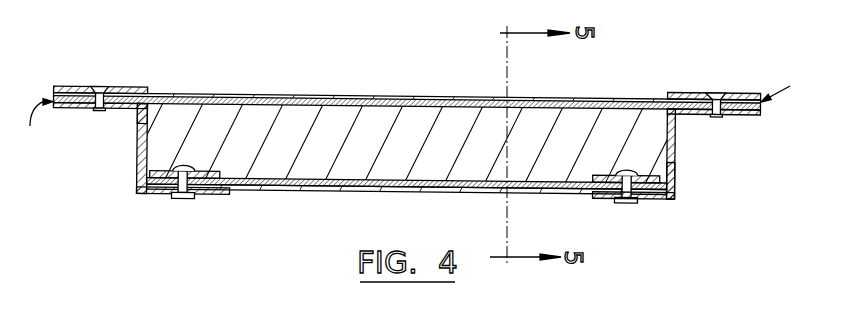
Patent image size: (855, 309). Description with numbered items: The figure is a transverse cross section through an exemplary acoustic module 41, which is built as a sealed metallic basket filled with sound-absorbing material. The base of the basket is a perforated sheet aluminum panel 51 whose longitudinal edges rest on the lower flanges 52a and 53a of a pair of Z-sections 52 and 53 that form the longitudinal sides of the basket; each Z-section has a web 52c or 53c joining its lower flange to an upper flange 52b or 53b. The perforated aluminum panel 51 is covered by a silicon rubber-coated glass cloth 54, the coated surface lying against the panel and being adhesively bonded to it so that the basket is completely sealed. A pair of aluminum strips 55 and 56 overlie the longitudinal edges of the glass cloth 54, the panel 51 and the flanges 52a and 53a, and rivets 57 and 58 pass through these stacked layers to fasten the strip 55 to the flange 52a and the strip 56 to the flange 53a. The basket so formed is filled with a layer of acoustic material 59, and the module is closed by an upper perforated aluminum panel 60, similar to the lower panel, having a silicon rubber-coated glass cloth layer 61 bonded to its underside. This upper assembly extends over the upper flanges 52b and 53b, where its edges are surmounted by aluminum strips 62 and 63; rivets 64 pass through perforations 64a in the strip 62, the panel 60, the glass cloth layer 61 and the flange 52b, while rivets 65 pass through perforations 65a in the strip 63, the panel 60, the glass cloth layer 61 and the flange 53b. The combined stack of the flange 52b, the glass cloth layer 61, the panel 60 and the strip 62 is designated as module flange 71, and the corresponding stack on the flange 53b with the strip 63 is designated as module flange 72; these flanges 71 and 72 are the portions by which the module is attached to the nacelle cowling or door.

The module 41 is at (425, 97).
The perforated sheet aluminum panel 51 is at (252, 190).
The Z-section 52 is at (674, 140).
The lower flange of Z-section 52 52a is at (651, 199).
The upper flange of Z-section 52 52b is at (738, 114).
The web portion of Z-section 52 52c is at (674, 181).
The Z-section 53 is at (138, 172).
The lower flange of Z-section 53 53a is at (160, 188).
The upper flange of Z-section 53 53b is at (72, 109).
The web of Z-section 53 53c is at (137, 120).
The silicon rubber-coated glass cloth 54 is at (262, 176).
The aluminum strip 55 is at (603, 175).
The aluminum strip 56 is at (165, 171).
The rivet 57 is at (629, 170).
The rivet 58 is at (188, 167).
The acoustic material 59 is at (389, 149).
The perforated aluminum panel 60 is at (305, 95).
The silicon rubber-coated glass cloth layer 61 is at (257, 108).
The aluminum strip 62 is at (733, 95).
The aluminum strip 63 is at (70, 86).
The rivet 64 is at (712, 92).
The perforation 64a is at (718, 114).
The rivet 65 is at (99, 86).
The perforation 65a is at (96, 111).
The module flange 71 is at (787, 89).
The module flange 72 is at (42, 121).